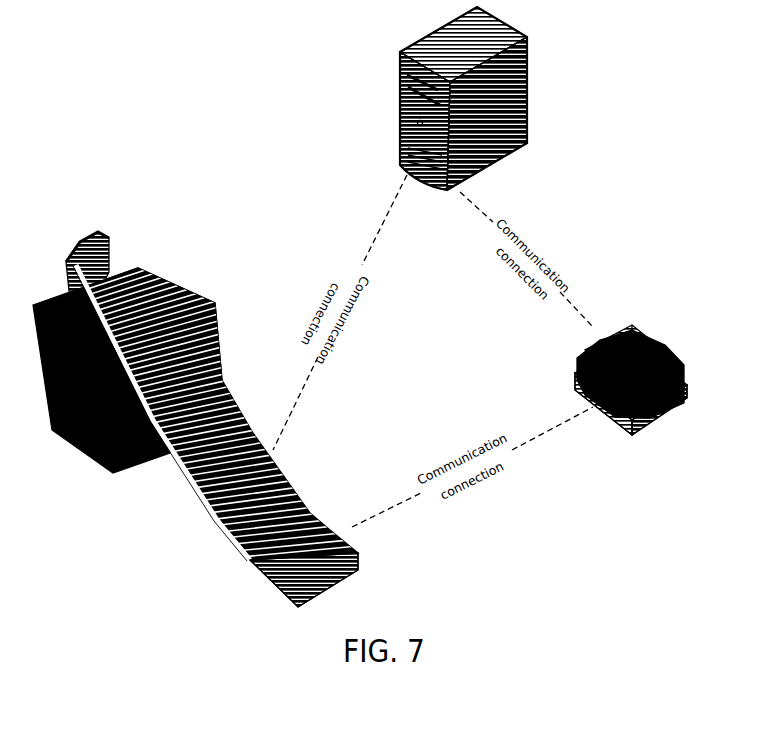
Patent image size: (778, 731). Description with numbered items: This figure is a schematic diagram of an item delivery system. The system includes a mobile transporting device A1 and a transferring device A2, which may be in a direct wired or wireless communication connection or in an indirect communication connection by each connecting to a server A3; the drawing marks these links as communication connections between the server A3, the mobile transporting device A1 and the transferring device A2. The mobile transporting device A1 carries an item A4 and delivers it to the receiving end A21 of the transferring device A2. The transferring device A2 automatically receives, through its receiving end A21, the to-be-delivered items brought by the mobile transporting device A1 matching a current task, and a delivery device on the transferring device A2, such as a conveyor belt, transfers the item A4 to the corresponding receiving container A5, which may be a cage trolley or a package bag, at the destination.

The mobile transporting device A1 is at (685, 388).
The transferring device A2 is at (301, 496).
The receiving end A21 is at (346, 530).
The server A3 is at (527, 115).
The item A4 is at (648, 332).
The receiving container A5 is at (155, 273).